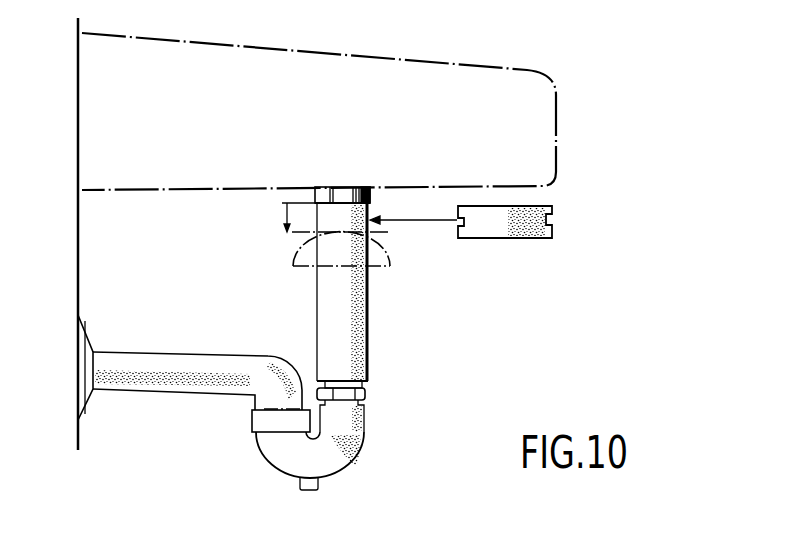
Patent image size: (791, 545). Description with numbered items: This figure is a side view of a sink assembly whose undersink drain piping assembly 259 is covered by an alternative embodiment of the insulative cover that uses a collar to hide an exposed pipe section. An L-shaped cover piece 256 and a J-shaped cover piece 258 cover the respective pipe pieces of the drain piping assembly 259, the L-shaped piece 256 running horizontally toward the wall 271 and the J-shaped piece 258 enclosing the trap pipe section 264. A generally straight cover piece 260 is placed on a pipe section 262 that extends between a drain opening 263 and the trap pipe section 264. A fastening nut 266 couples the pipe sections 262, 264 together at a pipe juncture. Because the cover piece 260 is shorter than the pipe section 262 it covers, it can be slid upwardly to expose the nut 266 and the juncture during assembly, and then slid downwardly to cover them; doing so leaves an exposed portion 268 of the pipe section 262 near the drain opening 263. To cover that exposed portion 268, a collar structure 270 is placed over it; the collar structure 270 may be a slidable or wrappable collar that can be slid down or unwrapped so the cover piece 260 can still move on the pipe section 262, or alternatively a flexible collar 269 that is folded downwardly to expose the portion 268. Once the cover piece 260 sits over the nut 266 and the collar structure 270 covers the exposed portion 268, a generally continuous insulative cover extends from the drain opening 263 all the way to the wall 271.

The L-shaped cover piece 256 is at (170, 362).
The J-shaped cover piece 258 is at (270, 467).
The undersink drain piping assembly 259 is at (336, 445).
The generally straight cover piece 260 is at (369, 305).
The pipe section 262 is at (368, 373).
The drain opening 263 is at (341, 186).
The trap pipe section 264 is at (365, 427).
The fastening nut 266 is at (370, 396).
The exposed portion 268 is at (287, 221).
The flexible collar 269 is at (390, 250).
The collar structure 270 is at (498, 240).
The wall 271 is at (80, 232).